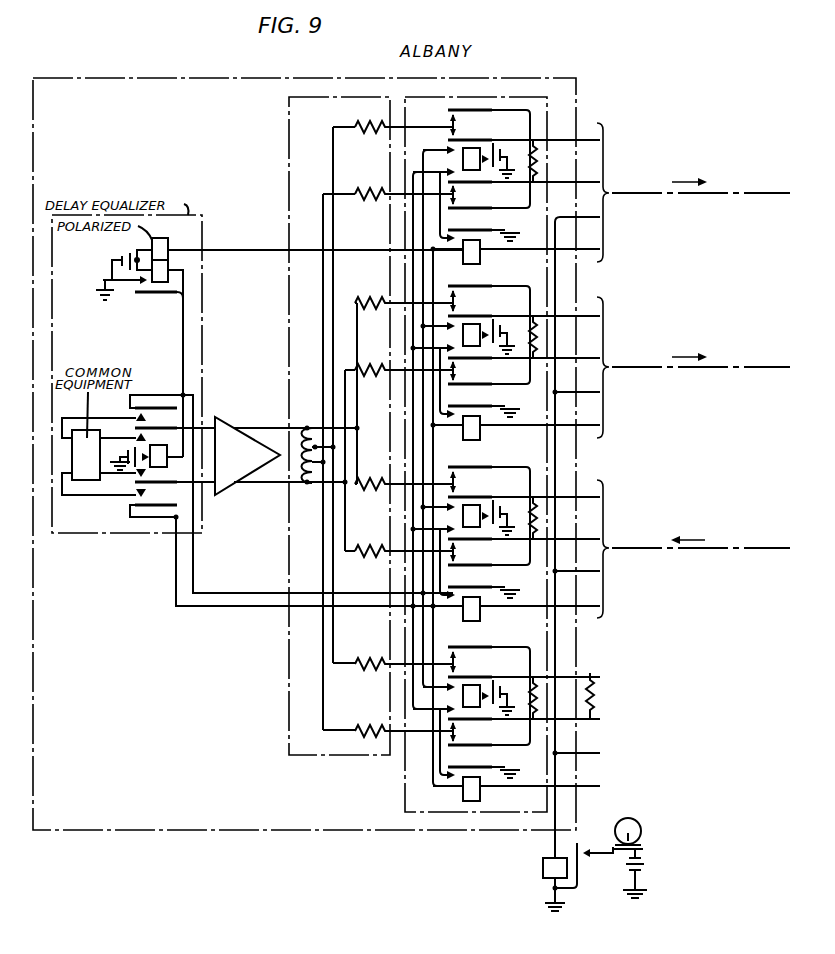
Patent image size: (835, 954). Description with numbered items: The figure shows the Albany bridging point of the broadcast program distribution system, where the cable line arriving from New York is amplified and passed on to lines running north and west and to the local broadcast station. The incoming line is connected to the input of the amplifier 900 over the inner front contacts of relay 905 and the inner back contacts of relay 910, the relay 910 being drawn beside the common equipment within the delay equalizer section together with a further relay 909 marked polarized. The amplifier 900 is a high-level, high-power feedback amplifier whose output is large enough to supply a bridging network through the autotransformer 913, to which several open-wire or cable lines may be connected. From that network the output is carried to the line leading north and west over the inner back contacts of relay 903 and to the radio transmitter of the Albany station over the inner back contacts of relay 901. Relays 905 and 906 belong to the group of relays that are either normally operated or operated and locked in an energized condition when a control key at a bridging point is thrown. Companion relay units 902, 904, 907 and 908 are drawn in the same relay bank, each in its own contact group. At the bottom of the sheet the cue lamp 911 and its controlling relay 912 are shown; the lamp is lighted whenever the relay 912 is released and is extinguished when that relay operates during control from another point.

The amplifier 900 is at (231, 430).
The relay 901 is at (458, 150).
The relay 902 is at (481, 255).
The relay 903 is at (500, 325).
The relay 904 is at (516, 432).
The relay 905 is at (500, 507).
The relay 906 is at (516, 612).
The relay 907 is at (500, 687).
The relay 908 is at (516, 794).
The polarized relay 909 is at (172, 238).
The relay 910 is at (163, 467).
The cue lamp 911 is at (641, 828).
The controlling relay 912 is at (543, 862).
The autotransformer 913 is at (292, 436).